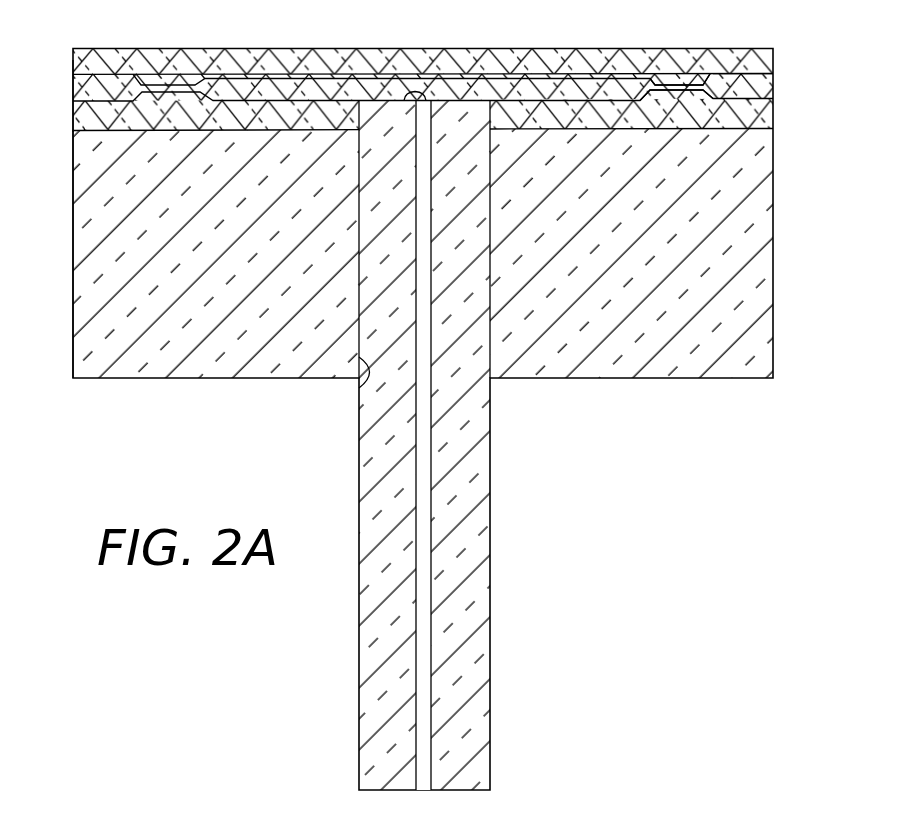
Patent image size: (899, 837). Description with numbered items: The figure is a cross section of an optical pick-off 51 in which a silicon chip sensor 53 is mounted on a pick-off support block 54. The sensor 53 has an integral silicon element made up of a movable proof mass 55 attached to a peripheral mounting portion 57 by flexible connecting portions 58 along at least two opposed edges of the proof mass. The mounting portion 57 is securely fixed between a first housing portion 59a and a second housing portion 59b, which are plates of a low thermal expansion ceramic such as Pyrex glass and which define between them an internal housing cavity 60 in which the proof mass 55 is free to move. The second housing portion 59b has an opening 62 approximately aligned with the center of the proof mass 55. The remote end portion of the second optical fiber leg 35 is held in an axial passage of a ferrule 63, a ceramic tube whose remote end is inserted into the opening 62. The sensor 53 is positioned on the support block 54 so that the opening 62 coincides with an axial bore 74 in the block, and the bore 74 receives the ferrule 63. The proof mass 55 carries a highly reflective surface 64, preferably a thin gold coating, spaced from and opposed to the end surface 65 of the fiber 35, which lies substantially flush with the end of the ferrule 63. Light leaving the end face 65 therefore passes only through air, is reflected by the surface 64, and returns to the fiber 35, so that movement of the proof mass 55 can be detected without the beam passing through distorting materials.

The second optical fiber leg 35 is at (431, 568).
The optical pick-off 51 is at (792, 177).
The silicon chip sensor 53 is at (65, 60).
The pick-off support block 54 is at (72, 356).
The movable proof mass 55 is at (646, 83).
The peripheral mounting portion 57 is at (721, 83).
The flexible connecting portions 58 is at (152, 83).
The first housing portion 59a is at (773, 62).
The second housing portion 59b is at (773, 109).
The internal housing cavity 60 is at (686, 83).
The opening 62 is at (490, 112).
The ferrule 63 is at (490, 440).
The reflective surface 64 is at (247, 102).
The end surface of the second optical fiber leg 65 is at (406, 95).
The axial bore 74 is at (359, 388).